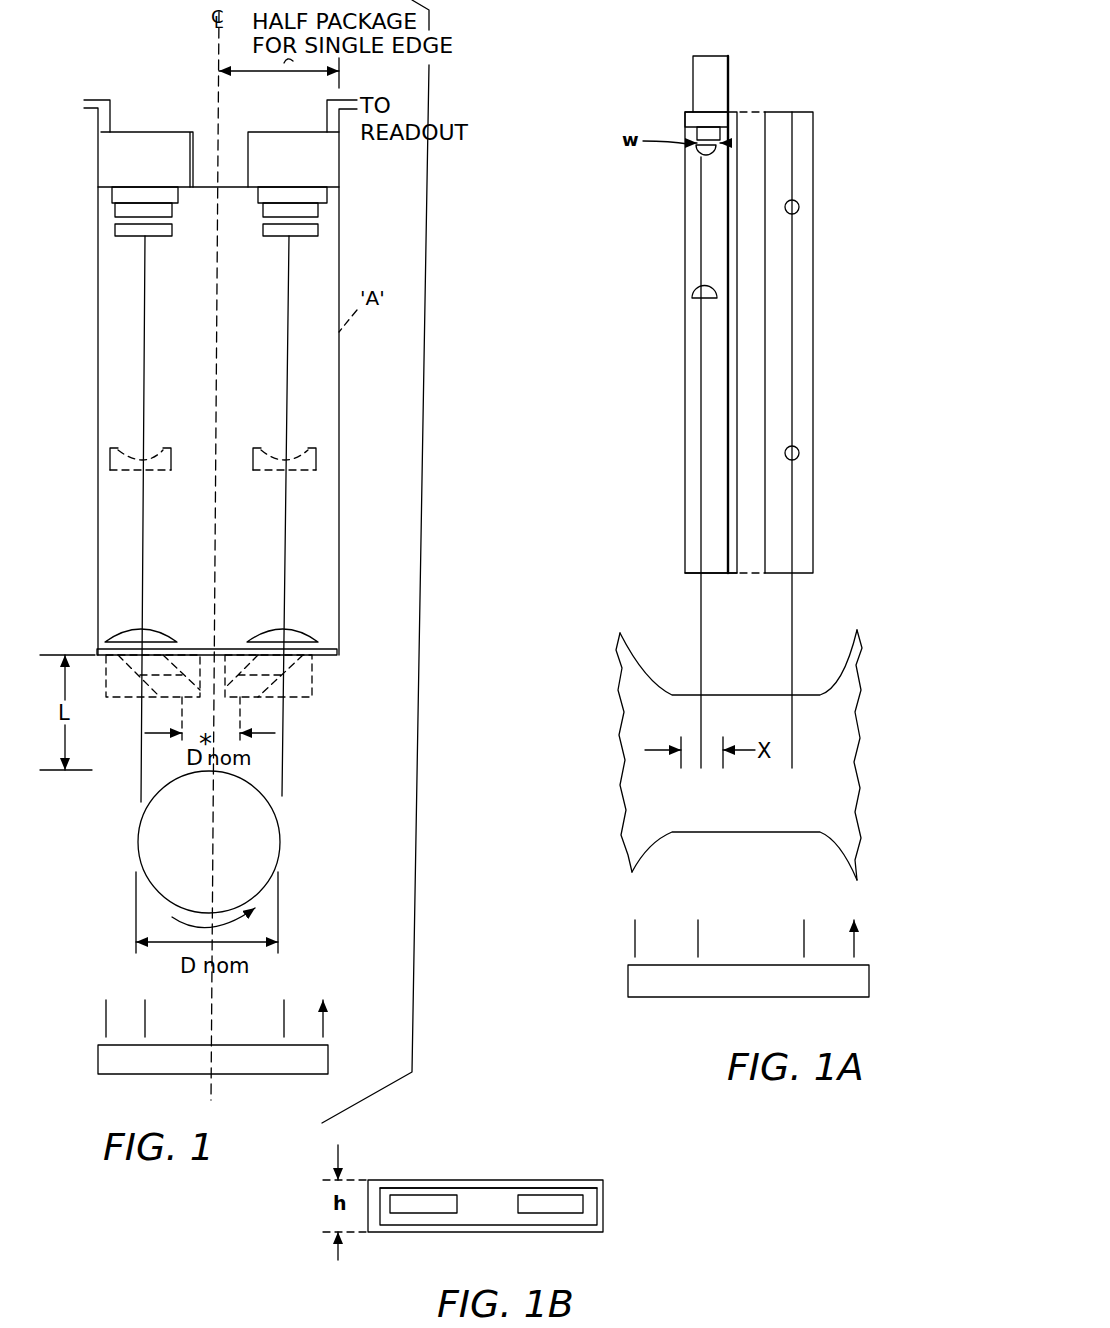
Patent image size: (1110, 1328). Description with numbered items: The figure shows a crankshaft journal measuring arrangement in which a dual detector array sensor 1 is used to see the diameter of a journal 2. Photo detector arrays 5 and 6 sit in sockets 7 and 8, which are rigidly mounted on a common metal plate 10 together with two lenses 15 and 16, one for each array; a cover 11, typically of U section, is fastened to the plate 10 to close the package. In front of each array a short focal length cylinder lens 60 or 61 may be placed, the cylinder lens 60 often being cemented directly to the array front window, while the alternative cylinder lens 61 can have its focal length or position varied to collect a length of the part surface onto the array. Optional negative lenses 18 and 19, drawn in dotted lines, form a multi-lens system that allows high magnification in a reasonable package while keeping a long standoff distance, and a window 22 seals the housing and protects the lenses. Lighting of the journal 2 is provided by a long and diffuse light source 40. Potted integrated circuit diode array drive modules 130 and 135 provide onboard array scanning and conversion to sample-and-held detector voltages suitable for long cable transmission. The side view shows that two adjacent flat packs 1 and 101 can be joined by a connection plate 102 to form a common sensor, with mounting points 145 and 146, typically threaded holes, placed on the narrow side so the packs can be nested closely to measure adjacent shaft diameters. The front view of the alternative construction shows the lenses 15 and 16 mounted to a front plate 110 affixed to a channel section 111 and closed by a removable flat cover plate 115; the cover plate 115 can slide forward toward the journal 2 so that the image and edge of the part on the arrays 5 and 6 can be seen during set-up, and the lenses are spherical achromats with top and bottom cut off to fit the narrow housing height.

In FIG. 1, the dual detector array sensor 1 is at (339, 382).
In FIG. 1A, the dual detector array sensor 1 is at (685, 230).
In FIG. 1, the journal 2 is at (227, 846).
In FIG. 1A, the journal 2 is at (693, 834).
In FIG. 1, the photo detector array 5 is at (112, 208).
In FIG. 1, the photo detector array 6 is at (327, 207).
In FIG. 1A, the photo detector array 6 is at (697, 133).
In FIG. 1, the socket 7 is at (178, 195).
In FIG. 1, the socket 8 is at (258, 195).
In FIG. 1A, the socket 8 is at (685, 120).
In FIG. 1A, the common metal plate 10 is at (735, 112).
In FIG. 1A, the cover 11 is at (688, 565).
In FIG. 1, the lens 15 is at (268, 630).
In FIG. 1B, the lens 15 is at (558, 1214).
In FIG. 1, the lens 16 is at (152, 630).
In FIG. 1B, the lens 16 is at (420, 1214).
In FIG. 1, the negative lens 18 is at (153, 450).
In FIG. 1, the negative lens 19 is at (278, 455).
In FIG. 1, the window 22 is at (320, 656).
In FIG. 1, the light source 40 is at (328, 1060).
In FIG. 1A, the light source 40 is at (628, 980).
In FIG. 1, the cylinder lens 60 is at (263, 236).
In FIG. 1A, the cylinder lens 60 is at (702, 152).
In FIG. 1, the cylinder lens 61 is at (168, 236).
In FIG. 1A, the cylinder lens 61 is at (700, 292).
In FIG. 1A, the flat pack 101 is at (813, 318).
In FIG. 1A, the connection plate 102 is at (752, 112).
In FIG. 1B, the front plate 110 is at (560, 1192).
In FIG. 1B, the channel section 111 is at (605, 1205).
In FIG. 1B, the flat cover plate 115 is at (415, 1180).
In FIG. 1, the diode array drive module 130 is at (98, 165).
In FIG. 1, the diode array drive module 135 is at (339, 150).
In FIG. 1A, the mounting point 145 is at (800, 207).
In FIG. 1A, the mounting point 146 is at (800, 453).